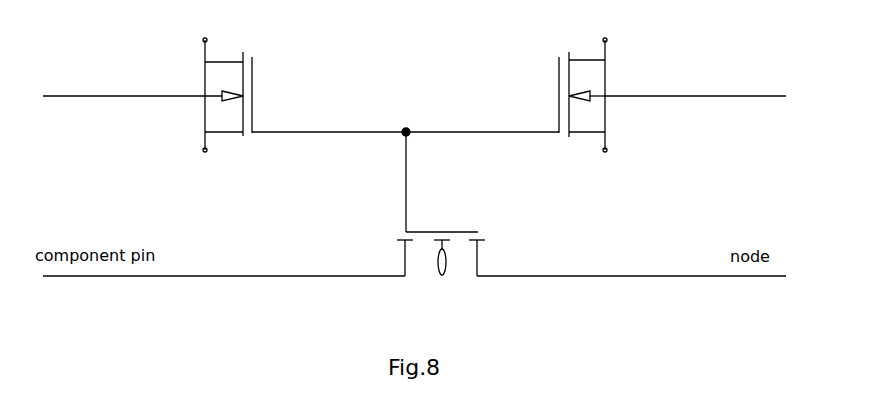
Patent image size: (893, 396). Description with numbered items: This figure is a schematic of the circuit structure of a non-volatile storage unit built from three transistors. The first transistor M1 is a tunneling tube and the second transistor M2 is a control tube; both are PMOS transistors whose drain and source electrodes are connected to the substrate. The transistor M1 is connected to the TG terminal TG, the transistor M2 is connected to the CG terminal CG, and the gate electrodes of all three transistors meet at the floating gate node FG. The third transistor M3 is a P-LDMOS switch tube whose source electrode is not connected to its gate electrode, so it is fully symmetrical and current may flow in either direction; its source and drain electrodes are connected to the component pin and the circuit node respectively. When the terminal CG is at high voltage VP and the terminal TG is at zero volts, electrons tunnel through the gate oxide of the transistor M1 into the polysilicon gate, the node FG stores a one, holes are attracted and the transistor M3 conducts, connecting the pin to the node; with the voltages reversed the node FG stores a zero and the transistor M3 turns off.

The first transistor M1 is at (301, 95).
The second transistor M2 is at (506, 95).
The third transistor M3 is at (436, 261).
The TG terminal TG is at (132, 78).
The CG terminal CG is at (695, 78).
The FG terminal FG is at (402, 165).